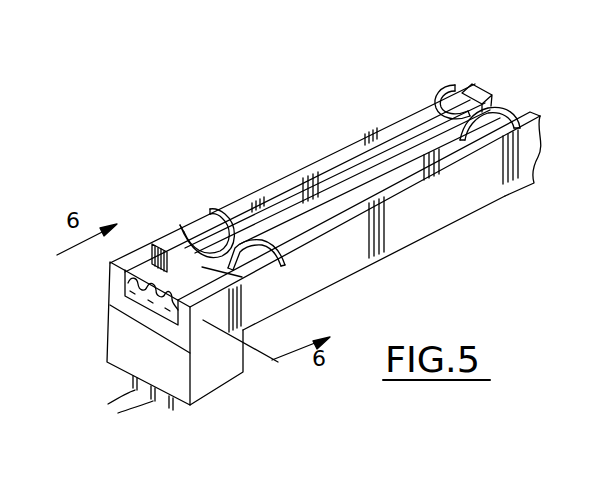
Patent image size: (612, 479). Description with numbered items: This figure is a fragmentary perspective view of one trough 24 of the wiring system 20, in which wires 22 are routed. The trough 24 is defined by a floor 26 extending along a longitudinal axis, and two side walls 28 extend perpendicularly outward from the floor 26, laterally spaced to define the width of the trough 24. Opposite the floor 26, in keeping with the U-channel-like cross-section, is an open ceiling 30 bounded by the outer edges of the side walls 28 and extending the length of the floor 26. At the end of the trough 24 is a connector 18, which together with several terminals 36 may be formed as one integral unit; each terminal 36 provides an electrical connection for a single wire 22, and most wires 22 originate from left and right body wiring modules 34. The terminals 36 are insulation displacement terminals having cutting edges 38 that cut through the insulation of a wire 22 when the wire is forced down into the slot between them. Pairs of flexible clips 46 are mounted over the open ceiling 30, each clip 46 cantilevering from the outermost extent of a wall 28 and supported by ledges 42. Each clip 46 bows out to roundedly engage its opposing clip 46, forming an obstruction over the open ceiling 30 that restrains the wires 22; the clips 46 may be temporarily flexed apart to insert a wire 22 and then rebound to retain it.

The connector 18 is at (220, 377).
The wiring system 20 is at (236, 132).
The wires 22 is at (506, 102).
The trough 24 is at (172, 252).
The floor 26 is at (325, 217).
The side walls 28 is at (350, 167).
The open ceiling 30 is at (373, 152).
The body wiring modules 34 is at (150, 405).
The terminals 36 is at (110, 305).
The cutting edges 38 is at (104, 294).
The ledges 42 is at (233, 213).
The flexible clips 46 is at (209, 212).